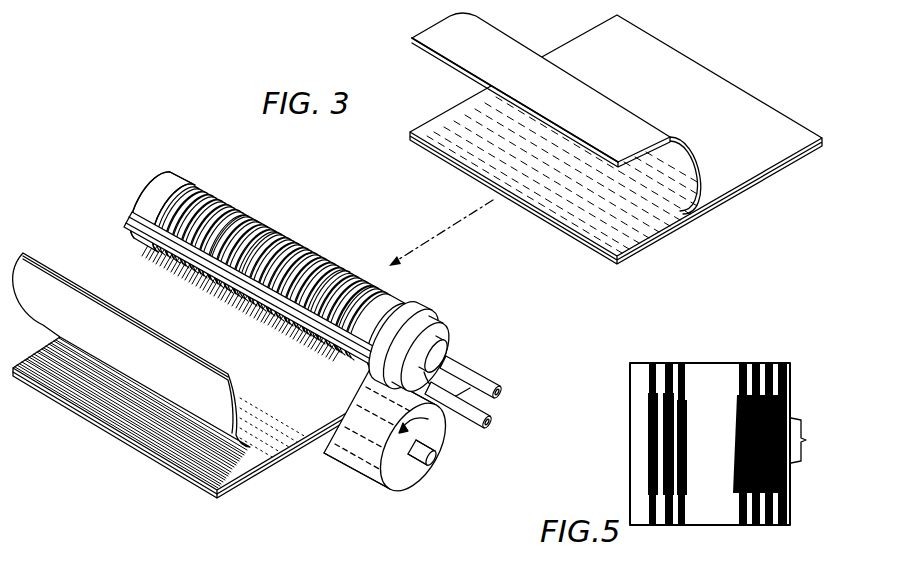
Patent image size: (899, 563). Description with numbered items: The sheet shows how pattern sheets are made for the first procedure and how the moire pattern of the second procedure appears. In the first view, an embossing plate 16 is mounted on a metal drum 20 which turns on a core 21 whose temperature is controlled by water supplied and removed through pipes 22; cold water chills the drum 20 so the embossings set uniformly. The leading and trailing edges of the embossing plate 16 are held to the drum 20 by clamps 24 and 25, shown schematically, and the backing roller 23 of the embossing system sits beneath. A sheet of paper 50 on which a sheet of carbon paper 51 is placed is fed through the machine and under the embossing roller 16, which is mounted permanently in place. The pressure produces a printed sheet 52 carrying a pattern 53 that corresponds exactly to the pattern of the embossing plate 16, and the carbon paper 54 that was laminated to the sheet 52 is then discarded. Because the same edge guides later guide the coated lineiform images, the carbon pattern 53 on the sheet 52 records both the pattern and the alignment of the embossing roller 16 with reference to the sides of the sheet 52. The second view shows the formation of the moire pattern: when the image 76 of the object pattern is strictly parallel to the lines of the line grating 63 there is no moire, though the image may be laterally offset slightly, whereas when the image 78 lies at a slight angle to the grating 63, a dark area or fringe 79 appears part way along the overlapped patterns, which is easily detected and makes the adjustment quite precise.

In FIG. 3, the embossing plate 16 is at (221, 198).
In FIG. 3, the metal drum 20 is at (427, 318).
In FIG. 3, the core 21 is at (447, 340).
In FIG. 3, the pipes 22 is at (492, 418).
In FIG. 3, the backing roller 23 is at (415, 476).
In FIG. 3, the clamp 24 is at (132, 210).
In FIG. 3, the clamp 25 is at (130, 228).
In FIG. 3, the sheet of paper 50 is at (722, 177).
In FIG. 3, the sheet of carbon paper 51 is at (678, 178).
In FIG. 3, the printed sheet 52 is at (247, 473).
In FIG. 3, the pattern 53 is at (183, 470).
In FIG. 3, the carbon paper 54 is at (60, 270).
In FIG. 5, the line grating 63 is at (772, 372).
In FIG. 5, the latent image 76 is at (685, 398).
In FIG. 5, the latent image 78 is at (780, 398).
In FIG. 5, the dark area or fringe 79 is at (807, 442).